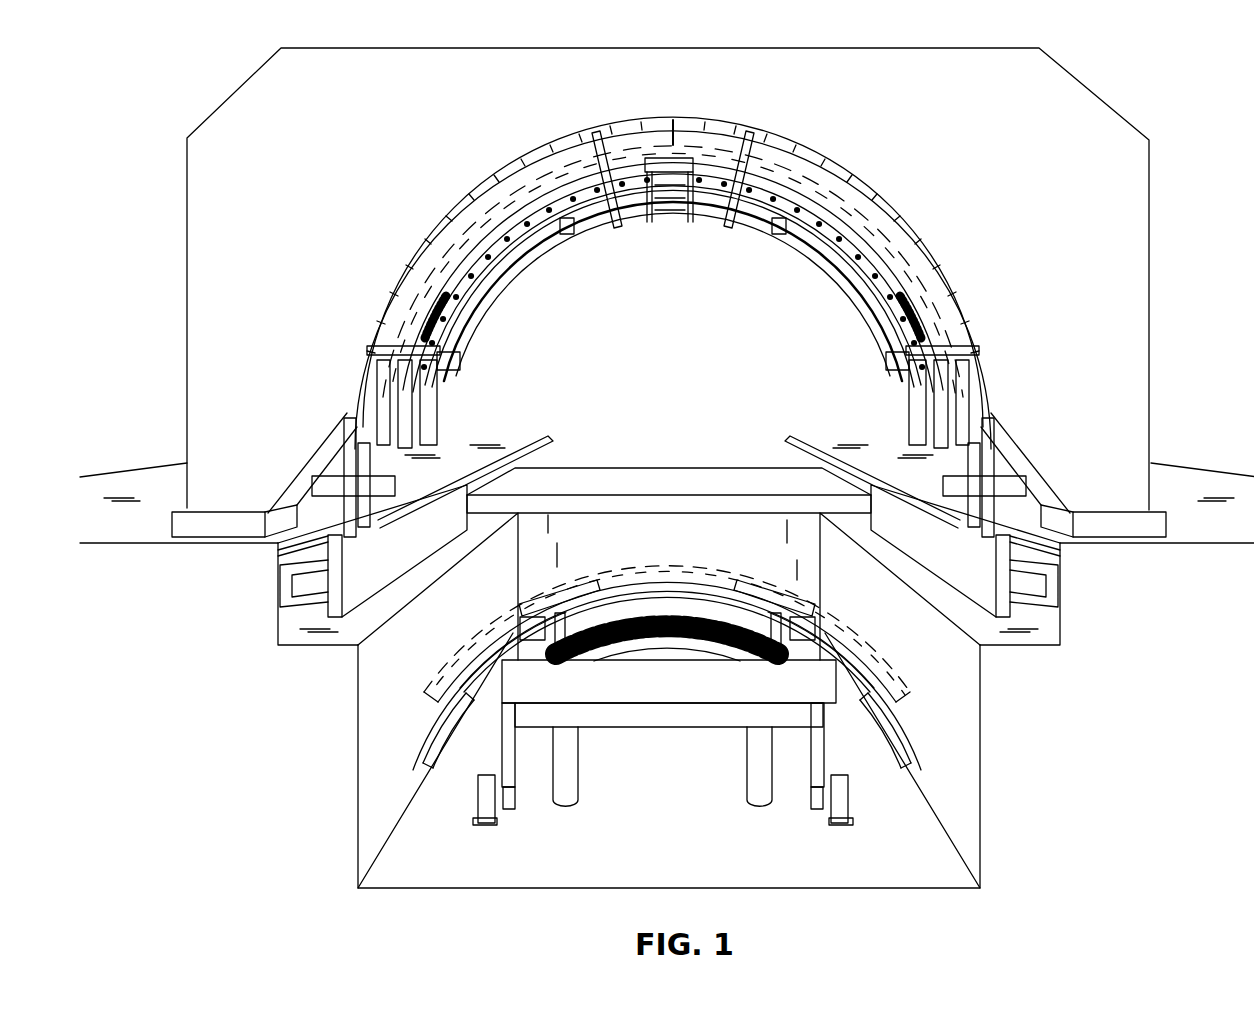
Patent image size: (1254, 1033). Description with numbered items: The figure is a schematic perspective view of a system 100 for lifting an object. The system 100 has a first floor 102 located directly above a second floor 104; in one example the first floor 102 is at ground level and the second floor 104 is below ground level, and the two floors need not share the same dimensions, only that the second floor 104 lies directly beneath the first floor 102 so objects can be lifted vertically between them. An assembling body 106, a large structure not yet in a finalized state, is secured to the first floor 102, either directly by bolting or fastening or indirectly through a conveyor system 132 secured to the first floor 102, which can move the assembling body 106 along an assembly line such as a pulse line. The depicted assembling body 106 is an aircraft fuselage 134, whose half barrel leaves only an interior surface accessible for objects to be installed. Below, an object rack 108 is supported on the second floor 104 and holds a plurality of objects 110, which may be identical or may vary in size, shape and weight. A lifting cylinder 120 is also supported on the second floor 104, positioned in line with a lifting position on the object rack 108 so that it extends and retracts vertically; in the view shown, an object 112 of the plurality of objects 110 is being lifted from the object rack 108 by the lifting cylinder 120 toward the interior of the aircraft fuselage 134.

The system for lifting an object 100 is at (1126, 72).
The first floor 102 is at (633, 478).
The second floor 104 is at (481, 872).
The assembling body 106 is at (964, 325).
The object rack 108 is at (703, 715).
The plurality of objects 110 is at (917, 764).
The object 112 is at (897, 673).
The lifting cylinder 120 is at (845, 622).
The conveyor system 132 is at (360, 497).
The aircraft fuselage 134 is at (919, 283).